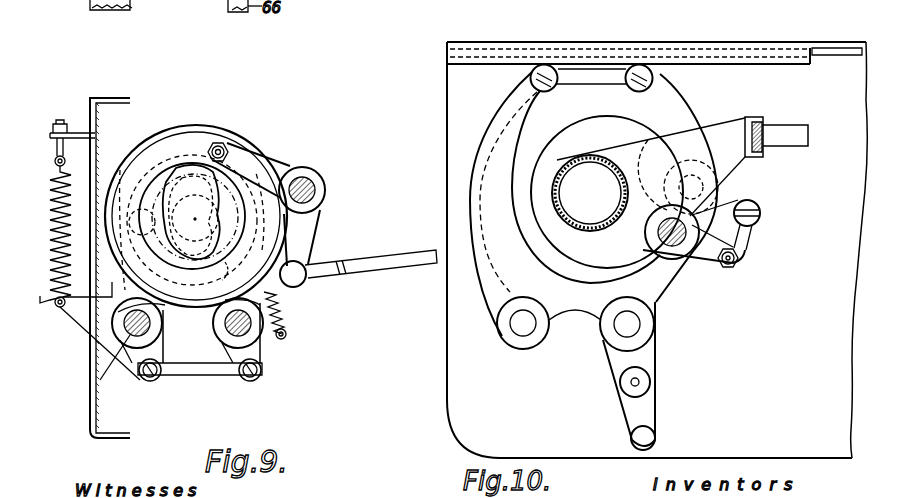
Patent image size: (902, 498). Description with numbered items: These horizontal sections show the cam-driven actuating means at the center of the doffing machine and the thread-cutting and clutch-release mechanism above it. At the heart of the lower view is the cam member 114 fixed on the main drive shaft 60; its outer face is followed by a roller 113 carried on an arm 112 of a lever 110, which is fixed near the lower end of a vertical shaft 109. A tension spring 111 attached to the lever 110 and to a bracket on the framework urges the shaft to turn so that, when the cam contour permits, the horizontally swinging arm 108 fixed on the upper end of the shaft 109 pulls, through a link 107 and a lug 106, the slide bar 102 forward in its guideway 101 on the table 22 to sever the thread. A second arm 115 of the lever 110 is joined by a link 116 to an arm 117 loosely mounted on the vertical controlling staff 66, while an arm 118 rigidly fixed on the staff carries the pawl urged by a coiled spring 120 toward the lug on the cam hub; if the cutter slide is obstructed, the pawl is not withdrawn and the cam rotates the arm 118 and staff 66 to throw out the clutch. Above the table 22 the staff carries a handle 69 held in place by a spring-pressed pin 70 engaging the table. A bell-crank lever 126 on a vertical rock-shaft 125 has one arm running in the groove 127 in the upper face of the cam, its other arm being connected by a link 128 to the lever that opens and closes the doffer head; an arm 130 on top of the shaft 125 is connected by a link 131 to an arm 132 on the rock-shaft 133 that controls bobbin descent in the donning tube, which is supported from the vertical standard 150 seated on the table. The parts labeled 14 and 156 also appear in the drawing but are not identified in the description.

In FIG. 9, the frame plate 14 is at (192, 312).
In FIG. 10, the table 22 is at (473, 420).
In FIG. 9, the main drive shaft 60 is at (192, 222).
In FIG. 9, the controlling staff 66 is at (286, 338).
In FIG. 10, the controlling staff 66 is at (628, 324).
In FIG. 10, the handle 69 is at (645, 412).
In FIG. 10, the spring-pressed pin 70 is at (647, 380).
In FIG. 10, the guideway 101 is at (496, 50).
In FIG. 10, the slide bar 102 is at (836, 53).
In FIG. 10, the lug 106 is at (660, 76).
In FIG. 10, the link 107 is at (577, 72).
In FIG. 10, the horizontally swinging arm 108 is at (492, 178).
In FIG. 9, the vertical shaft 109 is at (123, 335).
In FIG. 10, the vertical shaft 109 is at (522, 324).
In FIG. 9, the lever 110 is at (112, 327).
In FIG. 9, the tension spring 111 is at (97, 163).
In FIG. 9, the arm 112 is at (190, 275).
In FIG. 9, the roller 113 is at (129, 187).
In FIG. 9, the cam member 114 is at (131, 143).
In FIG. 9, the arm 115 is at (130, 355).
In FIG. 9, the link 116 is at (205, 375).
In FIG. 9, the arm 117 is at (265, 352).
In FIG. 9, the arm 118 is at (284, 312).
In FIG. 9, the coiled spring 120 is at (292, 287).
In FIG. 9, the vertical rock-shaft 125 is at (310, 183).
In FIG. 10, the vertical rock-shaft 125 is at (700, 187).
In FIG. 9, the bell-crank lever 126 is at (318, 242).
In FIG. 9, the groove 127 is at (222, 141).
In FIG. 9, the link 128 is at (388, 266).
In FIG. 10, the arm 130 is at (752, 204).
In FIG. 10, the link 131 is at (740, 241).
In FIG. 10, the arm 132 is at (707, 257).
In FIG. 10, the rock-shaft 133 is at (655, 238).
In FIG. 10, the vertical standard 150 is at (602, 149).
In FIG. 10, the block 156 is at (766, 152).